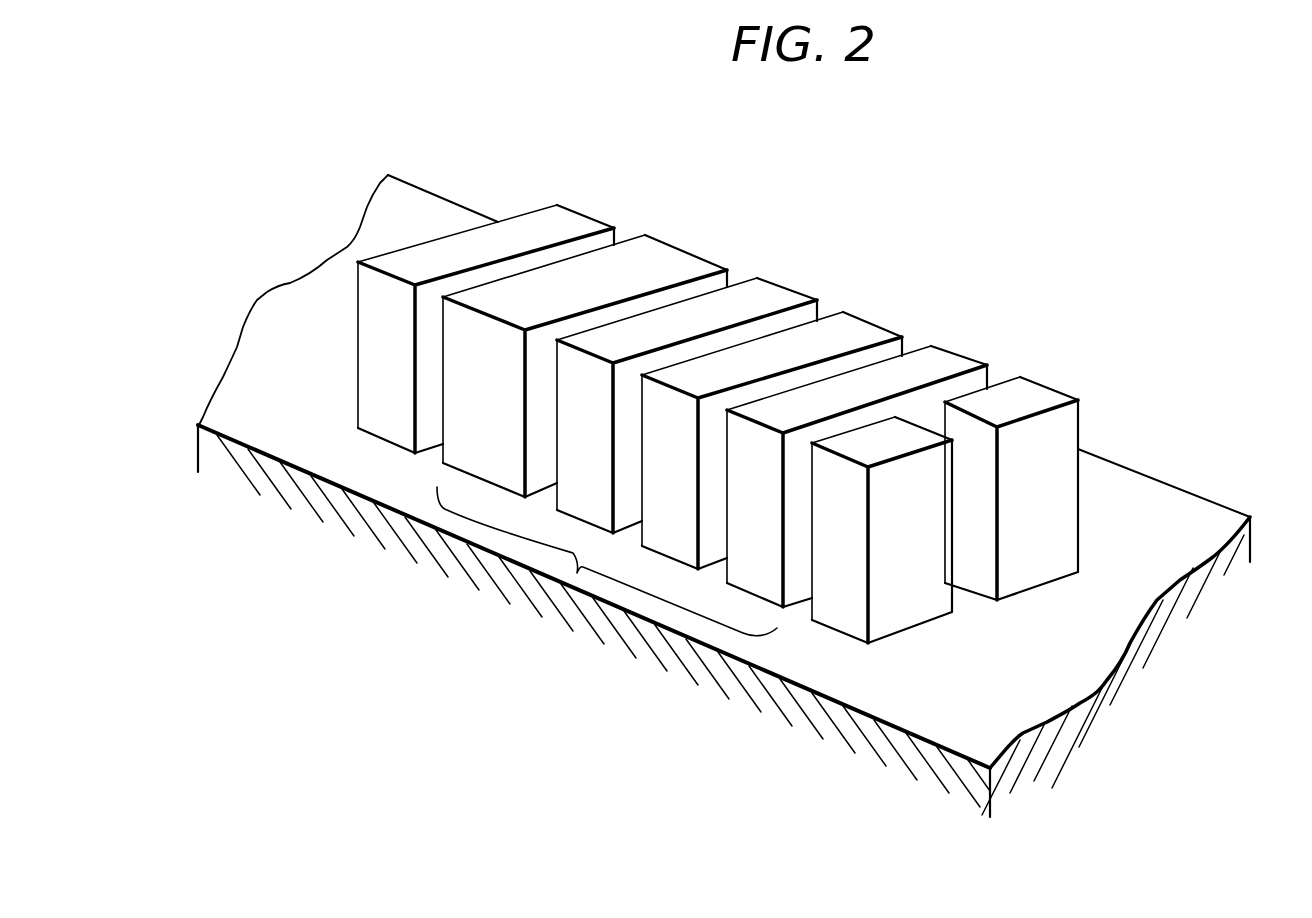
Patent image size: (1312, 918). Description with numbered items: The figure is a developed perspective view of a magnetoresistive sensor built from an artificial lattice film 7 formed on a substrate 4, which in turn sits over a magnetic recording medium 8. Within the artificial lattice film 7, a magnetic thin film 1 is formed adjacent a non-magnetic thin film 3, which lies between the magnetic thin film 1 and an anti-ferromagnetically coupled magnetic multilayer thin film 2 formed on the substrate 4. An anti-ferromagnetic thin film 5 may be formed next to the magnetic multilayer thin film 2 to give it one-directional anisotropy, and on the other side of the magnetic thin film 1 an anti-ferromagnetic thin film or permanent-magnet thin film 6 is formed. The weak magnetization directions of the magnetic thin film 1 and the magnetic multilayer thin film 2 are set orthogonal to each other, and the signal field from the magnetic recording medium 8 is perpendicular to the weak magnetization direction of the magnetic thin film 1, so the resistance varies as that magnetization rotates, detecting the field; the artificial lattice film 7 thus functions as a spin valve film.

The magnetic thin film 1 is at (952, 362).
The magnetic multilayer thin film 2 is at (765, 300).
The non-magnetic thin film 3 is at (860, 333).
The substrate 4 is at (397, 257).
The anti-ferromagnetic thin film 5 is at (617, 268).
The anti-ferromagnetic thin film or permanent-magnet thin film 6 is at (1060, 430).
The artificial lattice film 7 is at (575, 575).
The magnetic recording medium 8 is at (1077, 655).